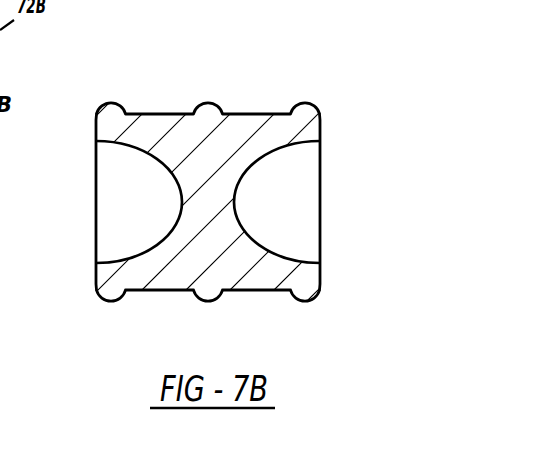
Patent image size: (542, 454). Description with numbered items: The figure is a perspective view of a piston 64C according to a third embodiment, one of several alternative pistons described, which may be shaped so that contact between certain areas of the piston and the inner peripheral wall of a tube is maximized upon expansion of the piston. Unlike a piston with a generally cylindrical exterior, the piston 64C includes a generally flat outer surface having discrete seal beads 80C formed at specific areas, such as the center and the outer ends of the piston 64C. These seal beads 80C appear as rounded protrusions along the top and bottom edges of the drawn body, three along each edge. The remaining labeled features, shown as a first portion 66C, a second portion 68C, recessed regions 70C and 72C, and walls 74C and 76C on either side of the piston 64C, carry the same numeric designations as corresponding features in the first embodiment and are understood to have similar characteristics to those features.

The piston 64C is at (340, 87).
The first portion 66C is at (93, 125).
The second portion 68C is at (325, 130).
The first recess 70C is at (142, 220).
The second recess 72C is at (270, 217).
The first wall 74C is at (110, 262).
The second wall 76C is at (289, 257).
The seal beads 80C is at (111, 103).